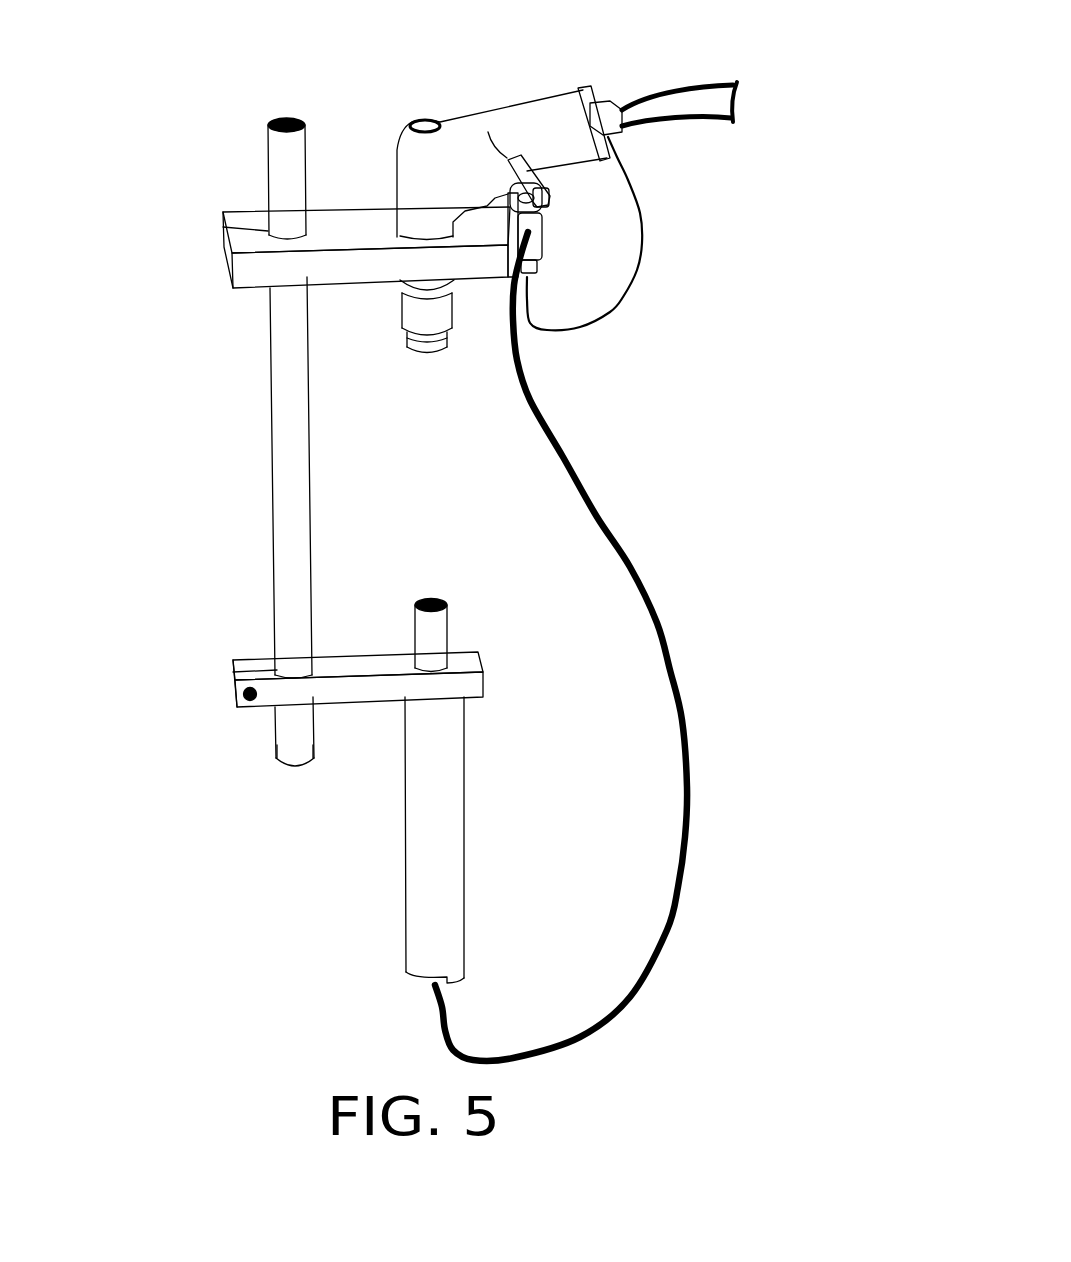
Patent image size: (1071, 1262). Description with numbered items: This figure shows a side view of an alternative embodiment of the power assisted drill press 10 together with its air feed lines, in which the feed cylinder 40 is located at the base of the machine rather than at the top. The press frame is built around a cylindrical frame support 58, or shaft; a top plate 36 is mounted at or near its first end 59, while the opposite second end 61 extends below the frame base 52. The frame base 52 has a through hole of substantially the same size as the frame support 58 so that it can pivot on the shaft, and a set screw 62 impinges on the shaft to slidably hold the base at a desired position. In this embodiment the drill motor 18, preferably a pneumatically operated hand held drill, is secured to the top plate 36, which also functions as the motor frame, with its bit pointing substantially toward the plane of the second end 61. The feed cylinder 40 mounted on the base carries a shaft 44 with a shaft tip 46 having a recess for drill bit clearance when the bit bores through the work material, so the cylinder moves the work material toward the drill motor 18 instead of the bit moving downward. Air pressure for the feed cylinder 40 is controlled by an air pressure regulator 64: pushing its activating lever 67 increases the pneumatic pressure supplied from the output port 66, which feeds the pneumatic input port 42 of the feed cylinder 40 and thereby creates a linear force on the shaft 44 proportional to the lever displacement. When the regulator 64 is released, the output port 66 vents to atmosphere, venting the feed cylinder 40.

The press 10 is at (176, 144).
The drill motor 18 is at (437, 143).
The top plate 36 is at (225, 262).
The feed cylinder 40 is at (407, 880).
The pneumatic input port 42 is at (427, 982).
The shaft 44 is at (447, 606).
The shaft tip 46 is at (431, 603).
The frame base 52 is at (233, 680).
The frame support 58 is at (268, 463).
The first end of frame support 59 is at (305, 121).
The second end of frame support 61 is at (290, 767).
The set screw 62 is at (240, 698).
The air pressure regulator 64 is at (541, 245).
The output port 66 is at (543, 248).
The activating lever 67 is at (548, 186).